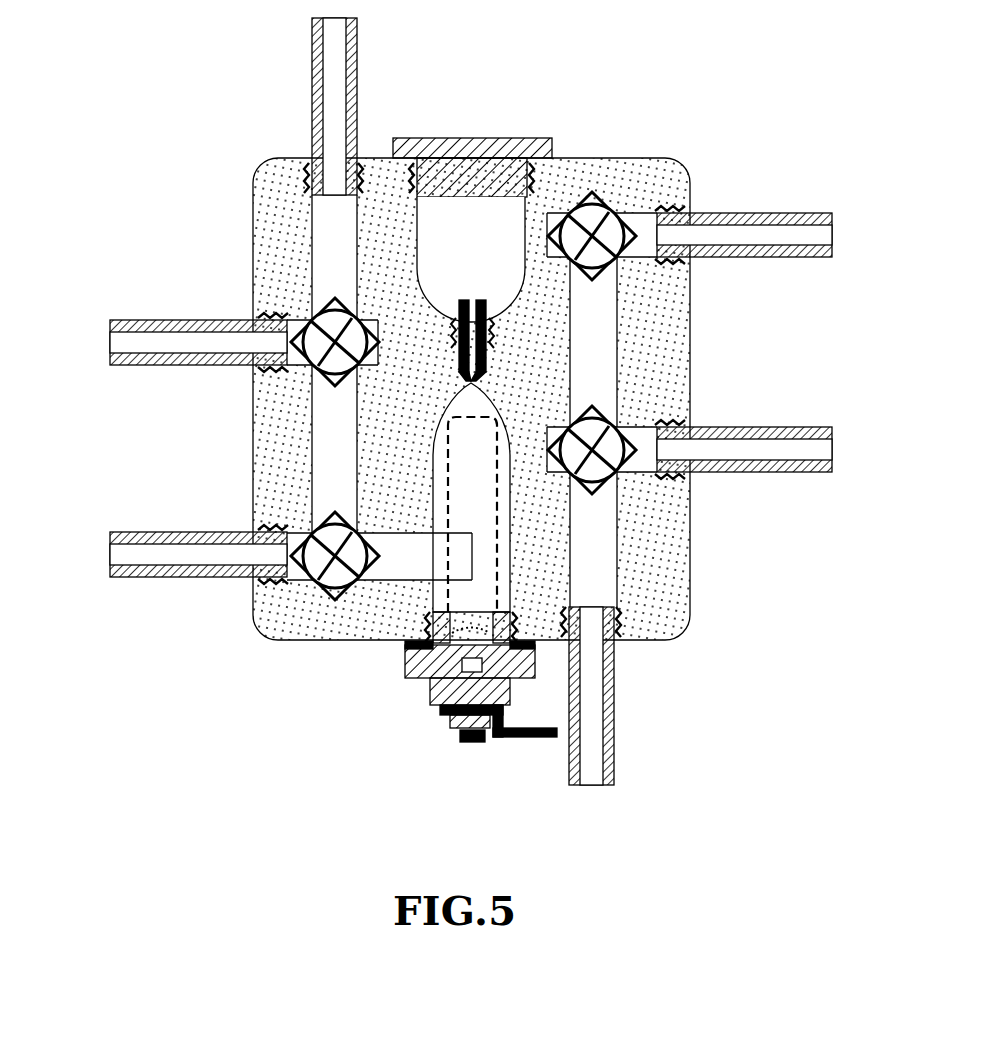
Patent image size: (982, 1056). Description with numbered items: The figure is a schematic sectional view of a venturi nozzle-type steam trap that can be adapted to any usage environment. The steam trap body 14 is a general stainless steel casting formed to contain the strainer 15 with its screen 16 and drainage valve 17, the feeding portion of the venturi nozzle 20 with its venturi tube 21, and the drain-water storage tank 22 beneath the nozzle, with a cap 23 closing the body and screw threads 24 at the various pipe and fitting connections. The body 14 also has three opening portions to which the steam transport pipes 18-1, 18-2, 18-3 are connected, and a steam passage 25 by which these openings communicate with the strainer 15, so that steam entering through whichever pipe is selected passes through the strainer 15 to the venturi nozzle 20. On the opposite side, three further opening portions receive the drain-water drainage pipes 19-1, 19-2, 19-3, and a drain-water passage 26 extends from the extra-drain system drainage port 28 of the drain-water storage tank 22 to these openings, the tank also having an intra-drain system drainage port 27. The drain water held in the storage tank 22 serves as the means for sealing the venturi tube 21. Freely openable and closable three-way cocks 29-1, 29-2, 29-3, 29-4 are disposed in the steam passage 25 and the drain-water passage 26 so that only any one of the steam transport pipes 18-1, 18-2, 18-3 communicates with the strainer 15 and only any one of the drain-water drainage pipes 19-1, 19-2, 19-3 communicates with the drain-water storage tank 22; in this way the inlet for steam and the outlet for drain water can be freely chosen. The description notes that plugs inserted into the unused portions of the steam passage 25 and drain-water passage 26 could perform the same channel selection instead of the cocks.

The steam trap body 14 is at (250, 620).
The strainer 15 is at (427, 594).
The screen 16 is at (600, 516).
The drainage valve 17 is at (419, 682).
The steam transport pipe 1 18-1 is at (309, 72).
The steam transport pipe 2 18-2 is at (113, 319).
The steam transport pipe 3 18-3 is at (113, 531).
The drain-water drainage pipe 1 19-1 is at (618, 738).
The drain-water drainage pipe 2 19-2 is at (786, 420).
The drain-water drainage pipe 3 19-3 is at (786, 206).
The venturi nozzle 20 is at (488, 360).
The venturi tube 21 is at (473, 385).
The drain-water storage tank 22 is at (427, 238).
The cap 23 is at (462, 136).
The screw thread 24 is at (305, 168).
The steam passage 25 is at (302, 233).
The drain-water passage 26 is at (623, 586).
The intra-drain system drainage port 27 is at (474, 296).
The extra-drain system drainage port 28 is at (533, 200).
The three-way cock 1 29-1 is at (324, 300).
The three-way cock 2 29-2 is at (322, 516).
The three-way cock 3 29-3 is at (612, 484).
The three-way cock 4 29-4 is at (604, 198).